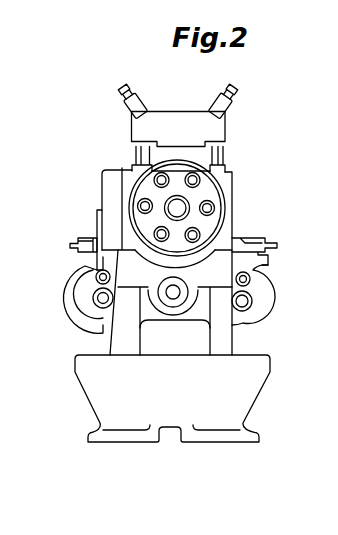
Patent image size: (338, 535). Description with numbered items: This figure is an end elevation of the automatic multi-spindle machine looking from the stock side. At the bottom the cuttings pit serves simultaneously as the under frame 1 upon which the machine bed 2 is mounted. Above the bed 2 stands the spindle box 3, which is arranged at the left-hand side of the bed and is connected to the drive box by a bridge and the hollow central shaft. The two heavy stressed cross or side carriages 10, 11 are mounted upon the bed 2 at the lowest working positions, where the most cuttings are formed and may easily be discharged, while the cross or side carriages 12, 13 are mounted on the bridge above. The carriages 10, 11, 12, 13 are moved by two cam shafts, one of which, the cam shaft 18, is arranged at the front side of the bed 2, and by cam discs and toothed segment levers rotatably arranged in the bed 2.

The under frame 1 is at (248, 397).
The machine bed 2 is at (221, 338).
The spindle box 3 is at (228, 224).
The side carriage 10 is at (255, 239).
The side carriage 11 is at (86, 240).
The side carriage 12 is at (143, 99).
The side carriage 13 is at (216, 103).
The cam shaft 18 is at (250, 305).